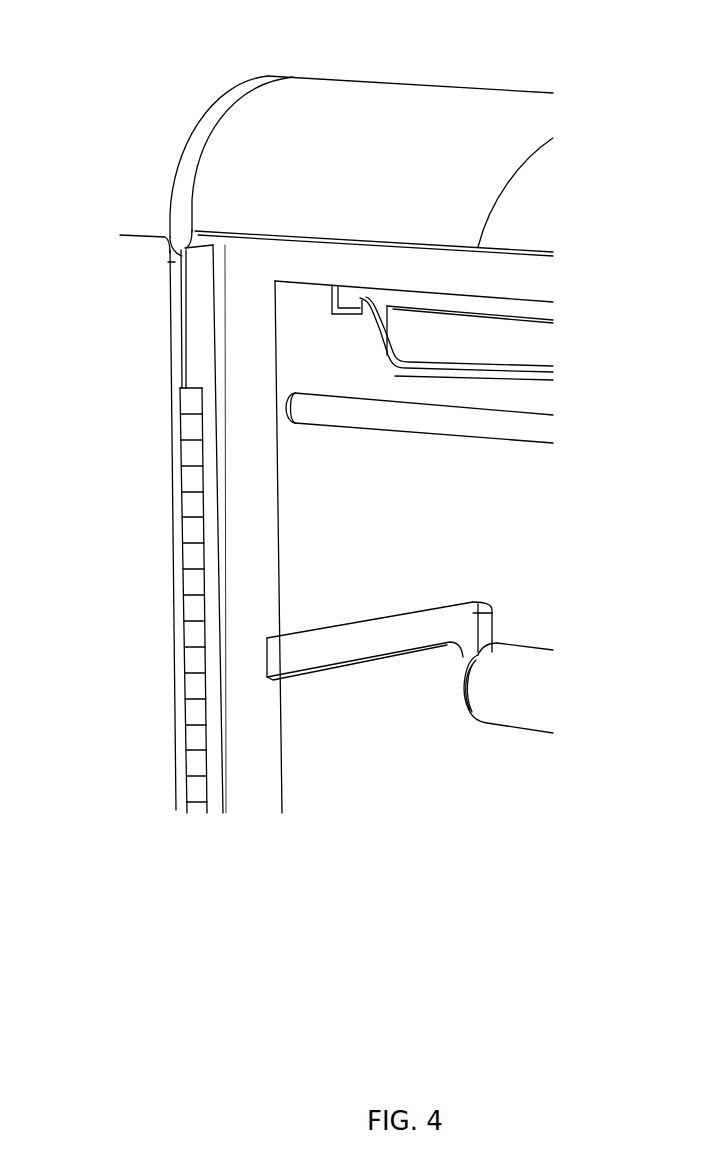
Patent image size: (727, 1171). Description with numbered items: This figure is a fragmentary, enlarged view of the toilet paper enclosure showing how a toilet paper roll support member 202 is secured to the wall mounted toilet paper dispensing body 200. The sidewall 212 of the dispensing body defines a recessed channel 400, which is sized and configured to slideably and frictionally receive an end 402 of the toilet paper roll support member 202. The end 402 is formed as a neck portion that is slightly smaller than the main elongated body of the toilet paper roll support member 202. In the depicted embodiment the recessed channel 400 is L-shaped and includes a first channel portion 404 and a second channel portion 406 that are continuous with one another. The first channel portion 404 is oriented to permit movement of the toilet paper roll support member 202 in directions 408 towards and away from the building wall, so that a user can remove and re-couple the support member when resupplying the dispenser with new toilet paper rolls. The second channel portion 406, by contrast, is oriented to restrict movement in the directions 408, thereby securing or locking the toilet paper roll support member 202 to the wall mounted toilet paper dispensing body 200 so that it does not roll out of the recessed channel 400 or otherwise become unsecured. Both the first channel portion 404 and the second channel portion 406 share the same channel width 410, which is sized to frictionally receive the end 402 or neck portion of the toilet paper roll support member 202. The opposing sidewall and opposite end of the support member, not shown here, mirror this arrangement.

The wall mounted toilet paper dispensing body 200 is at (183, 113).
The toilet paper roll support member 202 is at (523, 708).
The sidewall 212 is at (401, 553).
The recessed channel 400 is at (340, 647).
The end of the toilet paper roll support member 402 is at (510, 626).
The first channel portion 404 is at (310, 645).
The second channel portion 406 is at (468, 632).
The directions 408 is at (287, 652).
The channel width 410 is at (373, 622).